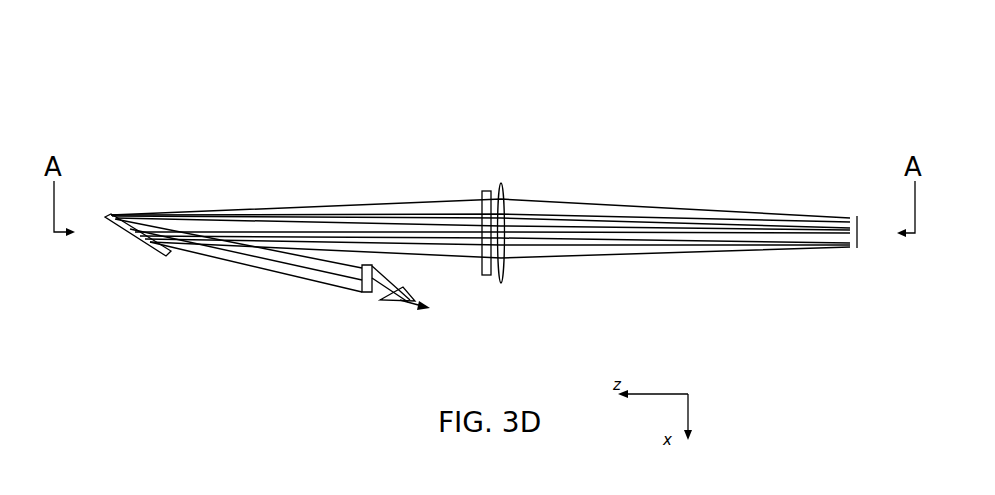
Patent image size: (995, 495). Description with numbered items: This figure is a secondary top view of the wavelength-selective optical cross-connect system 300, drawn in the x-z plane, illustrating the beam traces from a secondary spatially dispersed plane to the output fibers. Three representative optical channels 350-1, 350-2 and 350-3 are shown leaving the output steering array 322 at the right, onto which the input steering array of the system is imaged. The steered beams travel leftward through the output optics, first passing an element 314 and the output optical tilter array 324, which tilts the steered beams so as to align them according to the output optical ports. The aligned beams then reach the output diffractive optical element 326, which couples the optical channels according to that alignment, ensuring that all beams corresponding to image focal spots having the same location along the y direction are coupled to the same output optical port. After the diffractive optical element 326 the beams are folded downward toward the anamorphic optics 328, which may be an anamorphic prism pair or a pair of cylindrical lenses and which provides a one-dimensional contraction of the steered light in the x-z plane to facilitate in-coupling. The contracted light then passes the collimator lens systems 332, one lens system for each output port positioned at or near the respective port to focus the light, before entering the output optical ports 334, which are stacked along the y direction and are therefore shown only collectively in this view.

The wavelength-selective optical cross-connect system 300 is at (195, 85).
The lens 314 is at (518, 226).
The output steering array 322 is at (876, 232).
The output optical tilter array 324 is at (470, 222).
The output diffractive optical element 326 is at (128, 235).
The anamorphic optics 328 is at (368, 290).
The collimator lens systems 332 is at (399, 309).
The output optical ports 334 is at (432, 307).
The first optical channel 350-1 is at (772, 214).
The second optical channel 350-2 is at (838, 222).
The third optical channel 350-3 is at (813, 246).